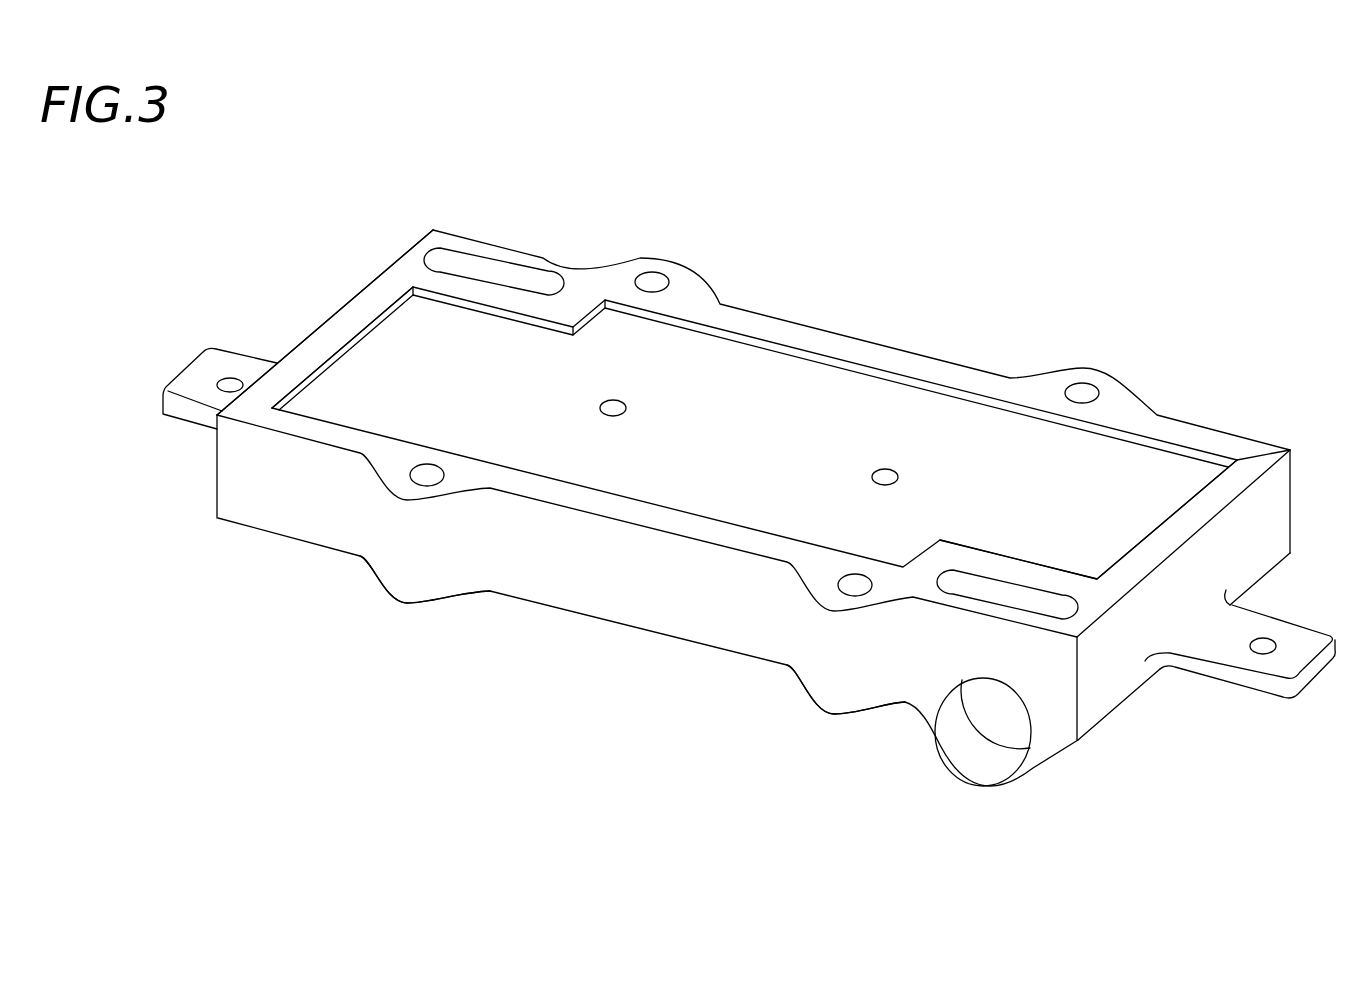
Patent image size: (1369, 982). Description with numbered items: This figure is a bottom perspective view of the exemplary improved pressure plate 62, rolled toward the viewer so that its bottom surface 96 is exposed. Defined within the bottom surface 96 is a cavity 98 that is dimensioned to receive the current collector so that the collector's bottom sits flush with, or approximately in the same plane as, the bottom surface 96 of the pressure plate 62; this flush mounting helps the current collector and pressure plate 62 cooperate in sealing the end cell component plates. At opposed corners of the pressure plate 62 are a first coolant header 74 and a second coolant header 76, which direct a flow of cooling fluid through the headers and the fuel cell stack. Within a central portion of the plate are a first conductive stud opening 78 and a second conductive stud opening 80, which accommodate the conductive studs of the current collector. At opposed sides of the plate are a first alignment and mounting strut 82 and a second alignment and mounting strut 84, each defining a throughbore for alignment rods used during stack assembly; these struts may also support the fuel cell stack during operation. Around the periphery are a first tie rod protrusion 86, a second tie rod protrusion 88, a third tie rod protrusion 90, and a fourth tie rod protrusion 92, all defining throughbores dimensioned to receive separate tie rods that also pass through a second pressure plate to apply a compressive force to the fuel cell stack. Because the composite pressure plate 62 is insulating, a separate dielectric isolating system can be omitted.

The pressure plate 62 is at (955, 253).
The first coolant header 74 is at (494, 278).
The second coolant header 76 is at (999, 724).
The first conductive stud opening 78 is at (622, 403).
The second conductive stud opening 80 is at (897, 467).
The first alignment and mounting strut 82 is at (202, 378).
The second alignment and mounting strut 84 is at (1265, 647).
The first tie rod protrusion 86 is at (427, 562).
The second tie rod protrusion 88 is at (843, 663).
The third tie rod protrusion 90 is at (1083, 390).
The fourth tie rod protrusion 92 is at (653, 280).
The bottom surface 96 is at (351, 316).
The cavity 98 is at (1198, 457).